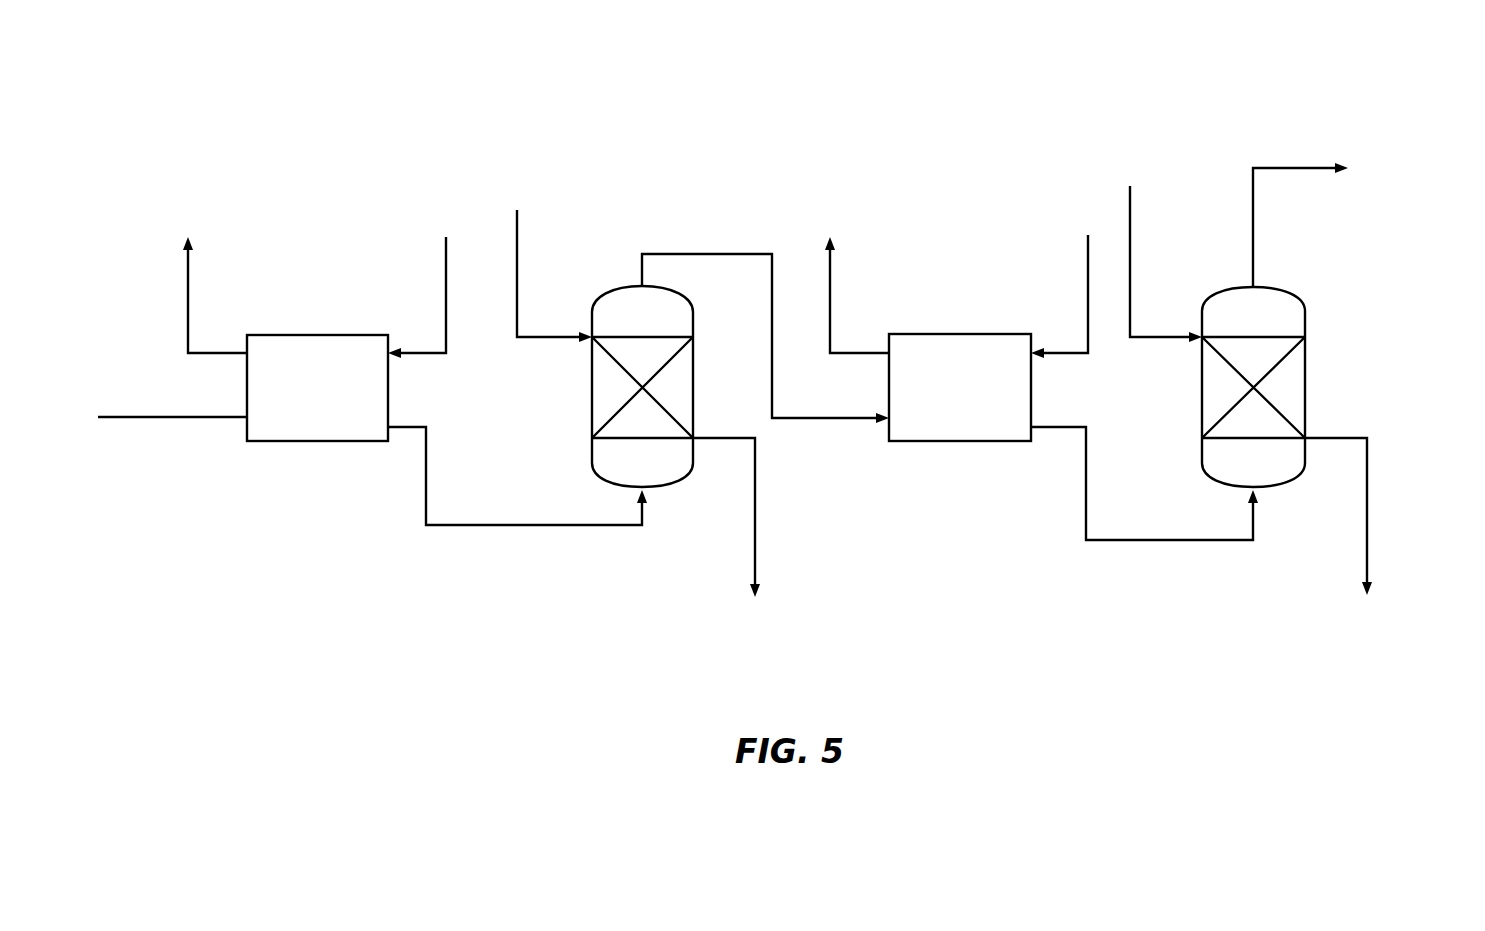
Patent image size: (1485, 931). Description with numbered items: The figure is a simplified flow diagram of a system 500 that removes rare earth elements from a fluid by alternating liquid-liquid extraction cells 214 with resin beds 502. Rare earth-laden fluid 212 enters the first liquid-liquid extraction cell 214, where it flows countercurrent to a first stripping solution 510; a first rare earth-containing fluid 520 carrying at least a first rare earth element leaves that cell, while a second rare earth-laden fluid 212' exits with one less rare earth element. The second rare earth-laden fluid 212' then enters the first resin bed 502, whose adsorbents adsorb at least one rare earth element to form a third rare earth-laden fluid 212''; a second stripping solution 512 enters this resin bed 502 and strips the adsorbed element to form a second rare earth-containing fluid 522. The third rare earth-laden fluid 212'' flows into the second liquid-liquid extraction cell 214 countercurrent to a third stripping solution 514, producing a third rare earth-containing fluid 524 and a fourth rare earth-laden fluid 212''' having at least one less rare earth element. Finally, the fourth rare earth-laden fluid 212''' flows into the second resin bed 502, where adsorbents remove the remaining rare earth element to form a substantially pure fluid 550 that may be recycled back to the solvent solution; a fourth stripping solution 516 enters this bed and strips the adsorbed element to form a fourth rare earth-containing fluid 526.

The system 500 is at (243, 152).
The rare earth-laden fluid 212 is at (172, 462).
The second rare earth-laden fluid 212' is at (517, 517).
The third rare earth-laden fluid 212'' is at (765, 289).
The fourth rare earth-laden fluid 212''' is at (1144, 538).
The liquid-liquid extraction cell 214 is at (639, 387).
The resin bed 502 is at (592, 391).
The first stripping solution 510 is at (444, 272).
The second stripping solution 512 is at (519, 245).
The third stripping solution 514 is at (1086, 270).
The fourth stripping solution 516 is at (1128, 210).
The first rare earth-containing fluid 520 is at (190, 287).
The second rare earth-containing fluid 522 is at (757, 533).
The third rare earth-containing fluid 524 is at (832, 285).
The fourth rare earth-containing fluid 526 is at (1368, 533).
The substantially pure fluid 550 is at (1295, 168).